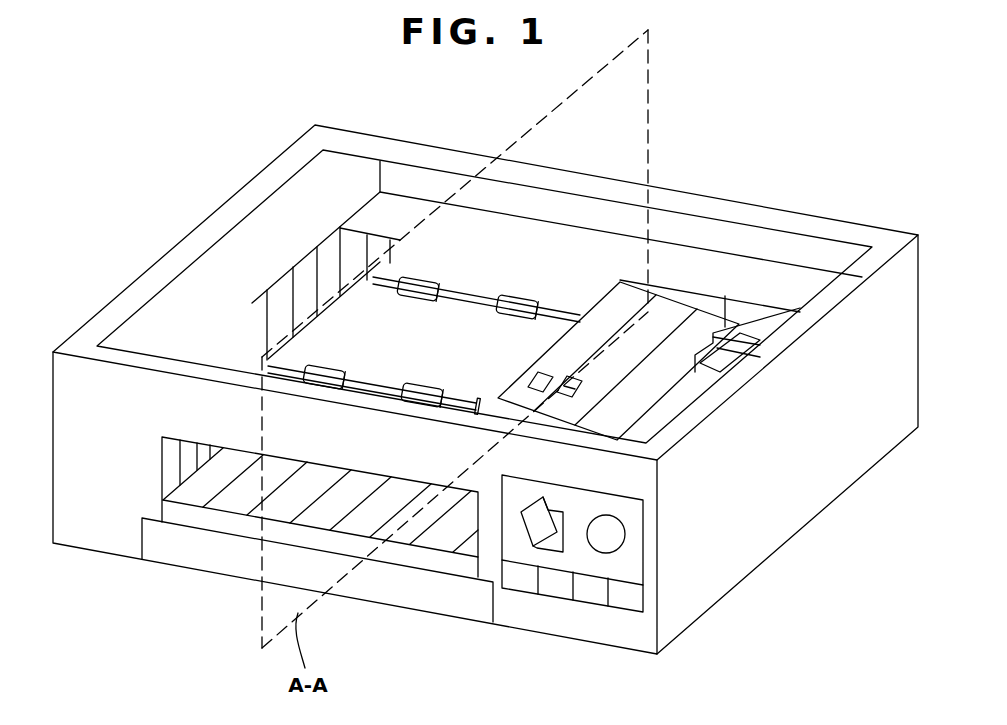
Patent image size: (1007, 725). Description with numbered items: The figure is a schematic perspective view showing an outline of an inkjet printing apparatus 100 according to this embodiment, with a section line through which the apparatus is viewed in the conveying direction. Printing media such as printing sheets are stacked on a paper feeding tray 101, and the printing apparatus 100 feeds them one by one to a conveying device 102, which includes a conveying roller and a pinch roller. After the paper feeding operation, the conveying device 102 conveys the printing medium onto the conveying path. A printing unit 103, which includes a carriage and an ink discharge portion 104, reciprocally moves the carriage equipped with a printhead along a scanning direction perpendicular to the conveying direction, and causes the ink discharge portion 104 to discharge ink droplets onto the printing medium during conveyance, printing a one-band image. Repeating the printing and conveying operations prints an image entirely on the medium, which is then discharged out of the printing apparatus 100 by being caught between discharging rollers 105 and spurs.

The inkjet printing apparatus 100 is at (796, 458).
The paper feeding tray 101 is at (207, 547).
The conveying device 102 is at (413, 287).
The printing unit 103 is at (718, 323).
The ink discharge portion 104 is at (610, 323).
The discharging rollers 105 is at (332, 363).